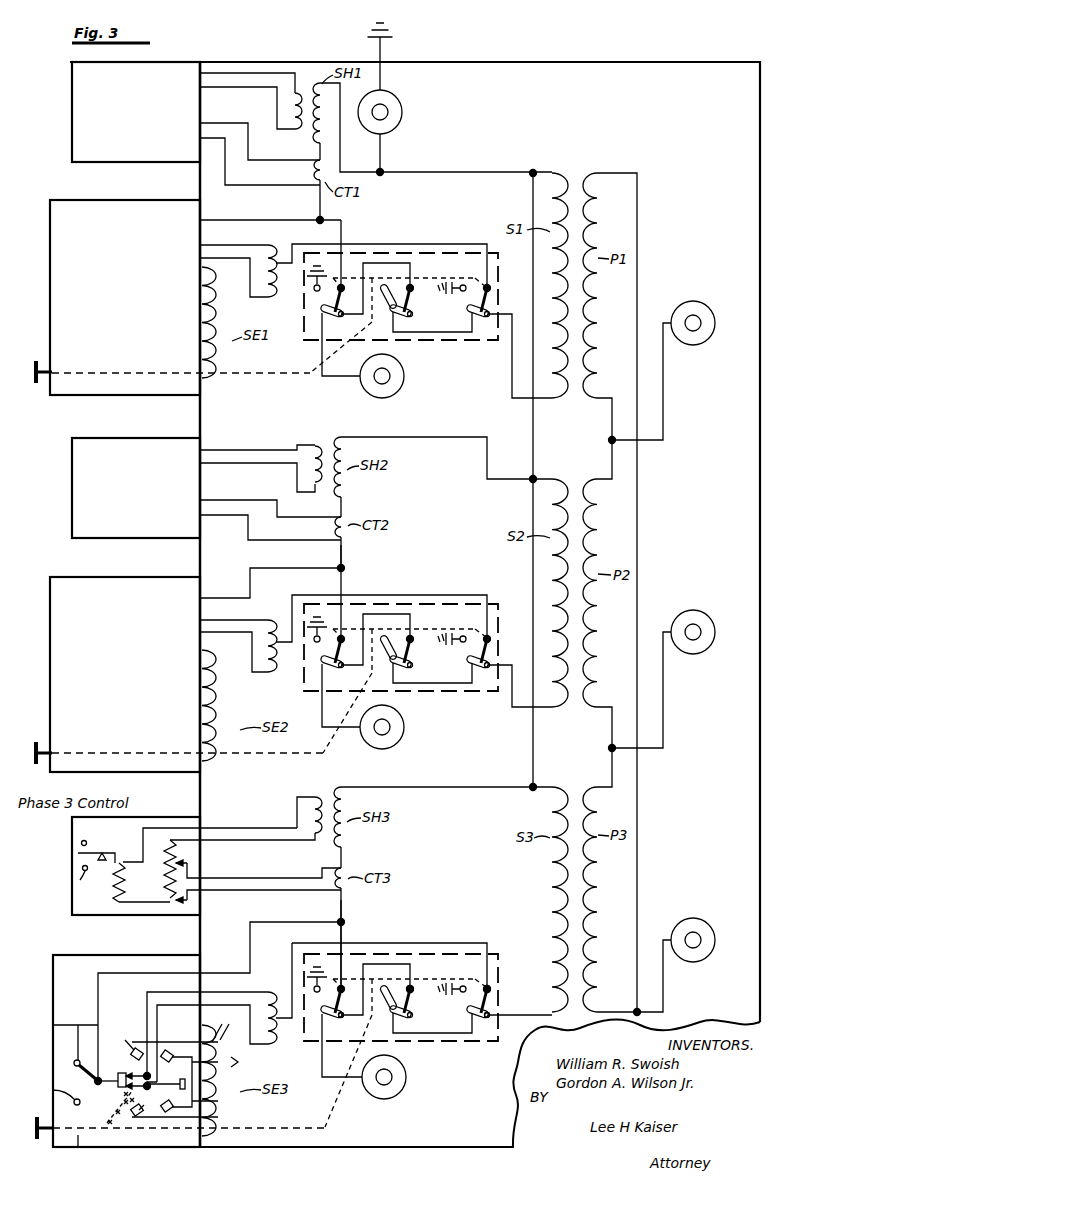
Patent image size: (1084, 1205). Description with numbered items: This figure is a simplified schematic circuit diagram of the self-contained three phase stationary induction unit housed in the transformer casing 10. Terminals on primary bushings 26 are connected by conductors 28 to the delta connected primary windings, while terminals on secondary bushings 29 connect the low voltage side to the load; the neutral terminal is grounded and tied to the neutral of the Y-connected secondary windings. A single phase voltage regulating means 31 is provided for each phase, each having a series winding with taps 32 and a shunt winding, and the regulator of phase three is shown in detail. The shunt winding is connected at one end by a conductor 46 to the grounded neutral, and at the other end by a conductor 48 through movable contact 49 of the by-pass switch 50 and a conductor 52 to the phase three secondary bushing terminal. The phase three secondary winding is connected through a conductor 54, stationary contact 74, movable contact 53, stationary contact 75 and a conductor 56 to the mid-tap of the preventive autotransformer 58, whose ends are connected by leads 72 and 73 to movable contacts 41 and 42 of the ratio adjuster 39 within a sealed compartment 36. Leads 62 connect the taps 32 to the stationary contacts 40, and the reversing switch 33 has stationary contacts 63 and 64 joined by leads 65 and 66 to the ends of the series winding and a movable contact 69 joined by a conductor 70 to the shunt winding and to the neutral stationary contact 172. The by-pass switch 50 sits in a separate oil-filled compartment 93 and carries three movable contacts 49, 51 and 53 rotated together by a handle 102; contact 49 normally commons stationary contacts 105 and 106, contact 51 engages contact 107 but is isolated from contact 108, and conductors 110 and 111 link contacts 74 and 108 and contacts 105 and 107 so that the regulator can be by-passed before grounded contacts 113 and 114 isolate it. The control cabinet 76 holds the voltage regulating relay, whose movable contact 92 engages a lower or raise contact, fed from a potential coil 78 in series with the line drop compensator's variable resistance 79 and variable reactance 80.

The transformer casing 10 is at (491, 62).
The primary bushings 26 is at (700, 344).
The conductors 28 is at (663, 403).
The secondary bushings 29 is at (396, 104).
The single phase voltage regulating means 31 is at (166, 197).
The taps 32 is at (238, 1062).
The reversing switch 33 is at (104, 1122).
The sealed compartments 36 is at (50, 236).
The ratio adjuster 39 is at (175, 1082).
The stationary contacts 40 is at (126, 1042).
The movable contact 41 is at (128, 1072).
The movable contact 42 is at (147, 1104).
The conductor 46 is at (466, 173).
The conductor 48 is at (324, 211).
The movable contact 49 is at (342, 297).
The by-pass switch 50 is at (432, 348).
The movable contact 51 is at (413, 297).
The conductor 52 is at (326, 384).
The movable contact 53 is at (492, 301).
The conductor 54 is at (510, 392).
The conductor 56 is at (404, 244).
The preventive autotransformer 58 is at (270, 298).
The leads 62 is at (222, 1025).
The stationary contact 63 is at (74, 1062).
The stationary contact 64 is at (53, 1091).
The lead 65 is at (53, 1026).
The lead 66 is at (78, 1136).
The movable contact 69 is at (80, 1076).
The conductor 70 is at (236, 225).
The lead 72 is at (147, 996).
The lead 73 is at (157, 1010).
The stationary contact 74 is at (470, 1009).
The stationary contact 75 is at (488, 990).
The control cabinet 76 is at (72, 156).
The potential coil 78 is at (296, 116).
The variable resistance 79 is at (176, 861).
The variable reactance 80 is at (168, 896).
The movable contact 92 is at (104, 857).
The oil-filled compartment 93 is at (487, 342).
The handle 102 is at (36, 384).
The stationary contact 105 is at (328, 1018).
The stationary contact 106 is at (344, 975).
The stationary contact 107 is at (414, 988).
The stationary contact 108 is at (393, 1015).
The conductor 110 is at (466, 1026).
The conductor 111 is at (396, 965).
The grounded stationary contact 113 is at (292, 986).
The grounded stationary contact 114 is at (478, 977).
The neutral stationary contact 172 is at (122, 1091).